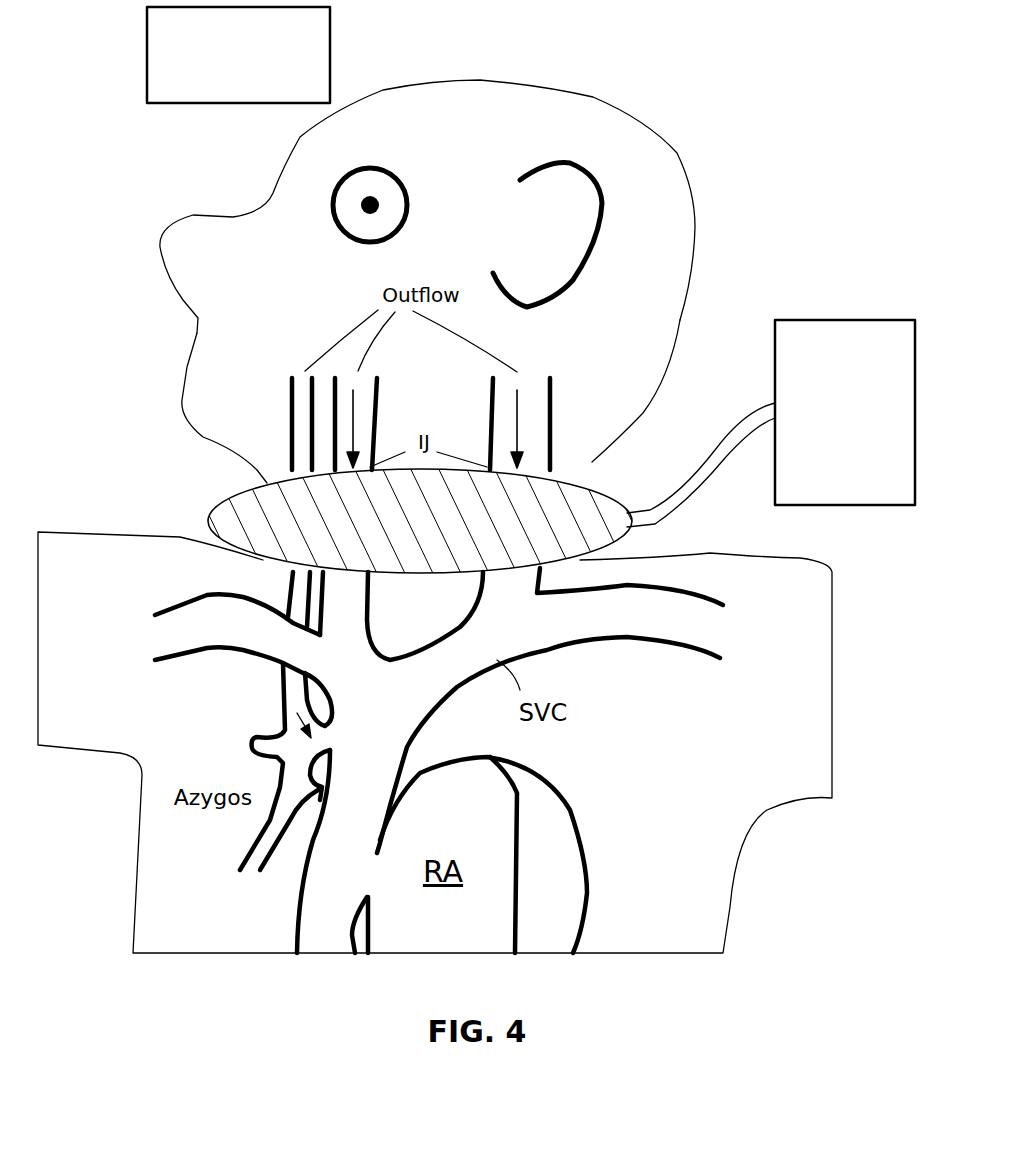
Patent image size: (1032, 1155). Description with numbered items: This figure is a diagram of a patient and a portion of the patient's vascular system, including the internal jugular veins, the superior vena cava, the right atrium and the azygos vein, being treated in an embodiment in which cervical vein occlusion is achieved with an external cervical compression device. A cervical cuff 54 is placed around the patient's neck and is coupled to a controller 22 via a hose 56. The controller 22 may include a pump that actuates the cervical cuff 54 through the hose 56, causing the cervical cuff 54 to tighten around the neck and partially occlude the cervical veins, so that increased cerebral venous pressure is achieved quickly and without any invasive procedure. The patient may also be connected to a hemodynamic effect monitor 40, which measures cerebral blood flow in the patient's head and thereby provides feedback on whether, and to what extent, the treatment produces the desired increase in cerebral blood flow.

The hemodynamic effect monitor 40 is at (437, 155).
The controller 22 is at (845, 412).
The cervical cuff 54 is at (208, 525).
The hose 56 is at (727, 427).